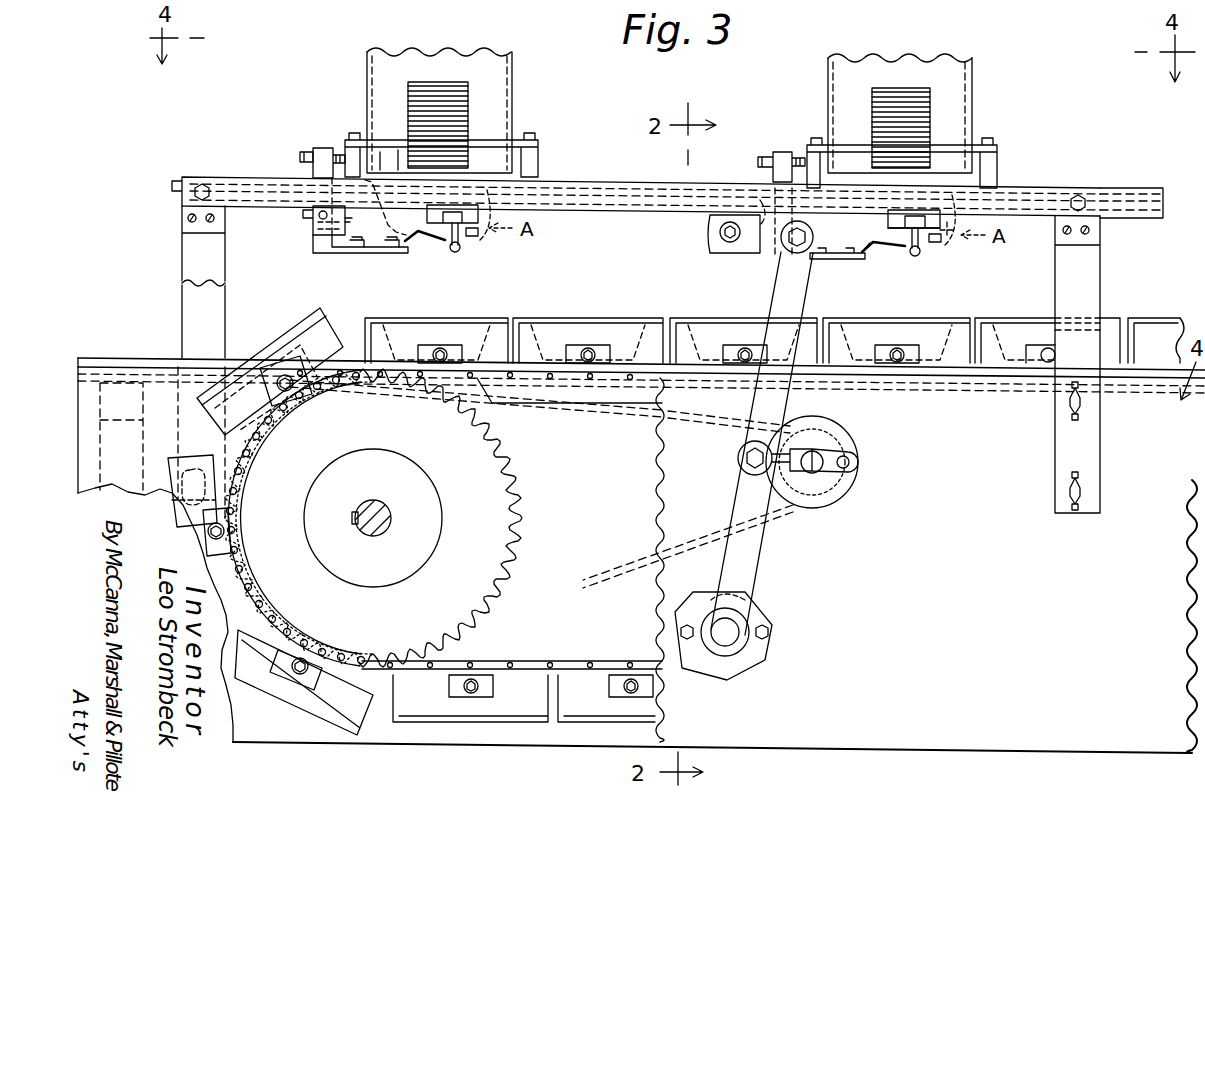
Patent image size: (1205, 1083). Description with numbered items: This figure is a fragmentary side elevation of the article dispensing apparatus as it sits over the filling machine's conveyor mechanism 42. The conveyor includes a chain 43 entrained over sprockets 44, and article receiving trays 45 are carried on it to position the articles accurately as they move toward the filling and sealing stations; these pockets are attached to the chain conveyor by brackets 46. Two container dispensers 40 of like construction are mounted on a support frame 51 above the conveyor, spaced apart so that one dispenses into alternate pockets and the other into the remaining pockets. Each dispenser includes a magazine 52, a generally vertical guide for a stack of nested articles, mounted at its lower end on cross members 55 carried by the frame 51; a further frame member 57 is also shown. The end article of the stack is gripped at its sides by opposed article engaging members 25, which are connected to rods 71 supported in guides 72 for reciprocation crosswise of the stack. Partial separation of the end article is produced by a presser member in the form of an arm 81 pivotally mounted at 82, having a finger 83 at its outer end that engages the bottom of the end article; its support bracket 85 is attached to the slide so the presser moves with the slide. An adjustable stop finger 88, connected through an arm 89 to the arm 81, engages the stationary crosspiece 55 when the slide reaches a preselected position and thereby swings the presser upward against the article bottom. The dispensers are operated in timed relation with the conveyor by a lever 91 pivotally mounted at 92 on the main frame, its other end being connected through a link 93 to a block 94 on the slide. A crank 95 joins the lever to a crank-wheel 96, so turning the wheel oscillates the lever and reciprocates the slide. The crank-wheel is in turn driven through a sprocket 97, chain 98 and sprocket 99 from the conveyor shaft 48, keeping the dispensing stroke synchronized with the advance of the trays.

The article engaging members 25 is at (478, 248).
The container dispensers 40 is at (524, 88).
The conveyor mechanism 42 is at (1159, 324).
The chain 43 is at (546, 380).
The sprockets 44 is at (518, 478).
The article receiving trays 45 is at (530, 330).
The brackets 46 is at (440, 354).
The conveyor shaft 48 is at (378, 510).
The support frame 51 is at (1052, 187).
The magazine 52 is at (966, 102).
The cross members 55 is at (990, 165).
The end block 57 is at (1125, 188).
The rods 71 is at (940, 230).
The guides 72 is at (900, 216).
The arm 81 is at (336, 255).
The pivot 82 is at (320, 216).
The finger 83 is at (420, 240).
The support bracket 85 is at (346, 222).
The adjustable stop finger 88 is at (338, 150).
The arm 89 is at (313, 170).
The lever 91 is at (755, 556).
The pivot 92 is at (740, 630).
The link 93 is at (772, 252).
The block 94 is at (716, 253).
The crank 95 is at (830, 456).
The crank-wheel 96 is at (848, 492).
The sprocket 97 is at (832, 432).
The chain 98 is at (586, 580).
The sprocket 99 is at (490, 522).